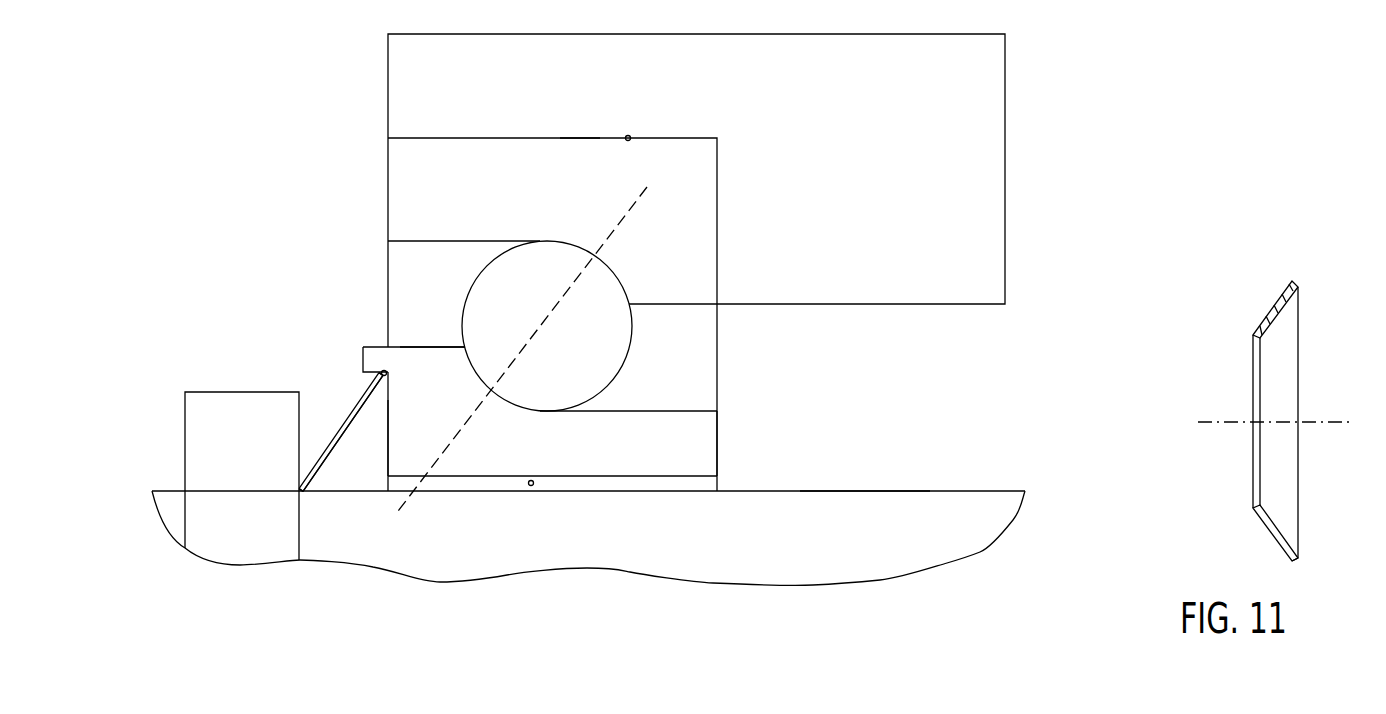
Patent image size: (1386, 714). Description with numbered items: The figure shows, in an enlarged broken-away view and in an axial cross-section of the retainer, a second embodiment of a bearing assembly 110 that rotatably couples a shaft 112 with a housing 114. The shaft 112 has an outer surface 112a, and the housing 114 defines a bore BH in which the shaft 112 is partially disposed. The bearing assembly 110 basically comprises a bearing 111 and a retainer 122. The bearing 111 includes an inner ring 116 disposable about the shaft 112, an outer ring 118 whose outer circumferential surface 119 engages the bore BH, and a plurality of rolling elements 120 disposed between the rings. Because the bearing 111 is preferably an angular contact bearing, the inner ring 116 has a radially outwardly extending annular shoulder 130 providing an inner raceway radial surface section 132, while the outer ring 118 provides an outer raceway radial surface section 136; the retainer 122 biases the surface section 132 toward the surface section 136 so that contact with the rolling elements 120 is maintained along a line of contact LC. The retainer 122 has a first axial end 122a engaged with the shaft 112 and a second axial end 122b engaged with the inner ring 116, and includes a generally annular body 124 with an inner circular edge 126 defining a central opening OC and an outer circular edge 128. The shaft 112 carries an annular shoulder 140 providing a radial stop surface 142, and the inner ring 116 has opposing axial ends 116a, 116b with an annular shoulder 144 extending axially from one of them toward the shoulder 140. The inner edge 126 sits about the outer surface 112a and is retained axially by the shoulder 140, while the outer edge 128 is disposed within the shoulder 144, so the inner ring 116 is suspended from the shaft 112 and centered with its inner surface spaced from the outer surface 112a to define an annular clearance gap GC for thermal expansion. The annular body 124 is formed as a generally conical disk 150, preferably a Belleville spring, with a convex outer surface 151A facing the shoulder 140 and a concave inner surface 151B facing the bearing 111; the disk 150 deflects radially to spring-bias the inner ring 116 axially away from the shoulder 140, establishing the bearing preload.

In FIG. 10, the bearing assembly 110 is at (300, 140).
In FIG. 10, the bearing 111 is at (358, 198).
In FIG. 10, the shaft 112 is at (991, 488).
In FIG. 10, the outer surface 112a is at (865, 490).
In FIG. 10, the housing 114 is at (1003, 121).
In FIG. 10, the inner ring 116 is at (678, 479).
In FIG. 10, the axial end 116a is at (382, 448).
In FIG. 10, the axial end 116b is at (720, 444).
In FIG. 10, the outer ring 118 is at (529, 156).
In FIG. 10, the outer circumferential surface 119 is at (578, 138).
In FIG. 10, the rolling elements 120 is at (630, 350).
In FIG. 10, the retainer 122 is at (325, 381).
In FIG. 11, the retainer 122 is at (1178, 298).
In FIG. 10, the first axial end 122a is at (300, 489).
In FIG. 10, the second axial end 122b is at (386, 378).
In FIG. 10, the annular body 124 is at (375, 397).
In FIG. 11, the annular body 124 is at (1261, 301).
In FIG. 10, the inner circular edge 126 is at (302, 492).
In FIG. 11, the inner circular edge 126 is at (1254, 337).
In FIG. 10, the outer circular edge 128 is at (386, 372).
In FIG. 11, the outer circular edge 128 is at (1293, 282).
In FIG. 10, the annular shoulder 130 is at (452, 360).
In FIG. 10, the inner raceway radial surface section 132 is at (477, 378).
In FIG. 10, the outer raceway radial surface section 136 is at (610, 270).
In FIG. 10, the annular shoulder 140 is at (246, 404).
In FIG. 10, the radial stop surface 142 is at (302, 432).
In FIG. 10, the annular shoulder 144 is at (374, 348).
In FIG. 11, the conical disk 150 is at (1256, 525).
In FIG. 11, the convex outer surface 151A is at (1282, 551).
In FIG. 11, the concave inner surface 151B is at (1276, 318).
In FIG. 10, the bore BH is at (629, 136).
In FIG. 10, the line of contact LC is at (622, 218).
In FIG. 10, the clearance gap GC is at (531, 486).
In FIG. 11, the central opening OC is at (1255, 398).